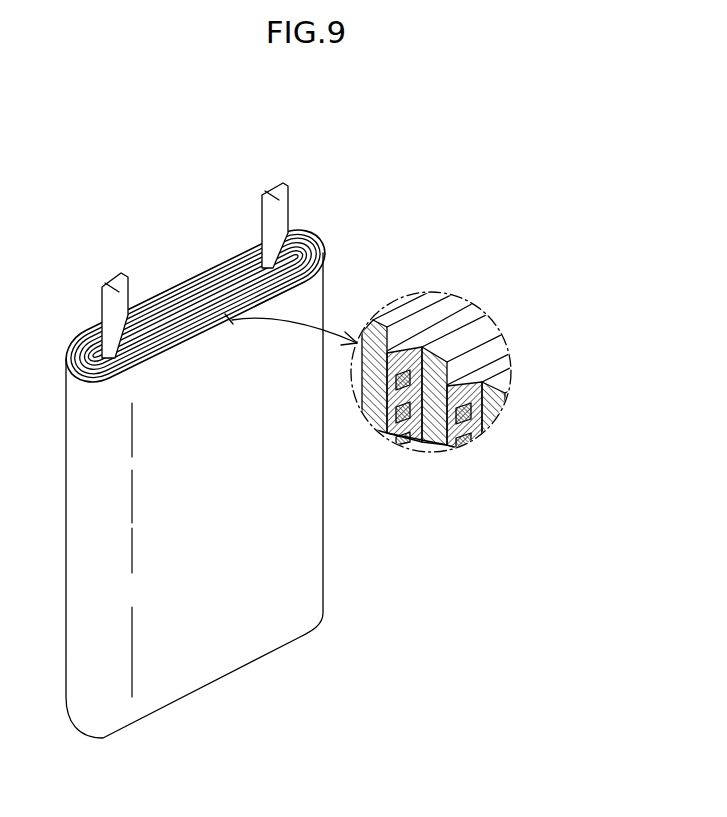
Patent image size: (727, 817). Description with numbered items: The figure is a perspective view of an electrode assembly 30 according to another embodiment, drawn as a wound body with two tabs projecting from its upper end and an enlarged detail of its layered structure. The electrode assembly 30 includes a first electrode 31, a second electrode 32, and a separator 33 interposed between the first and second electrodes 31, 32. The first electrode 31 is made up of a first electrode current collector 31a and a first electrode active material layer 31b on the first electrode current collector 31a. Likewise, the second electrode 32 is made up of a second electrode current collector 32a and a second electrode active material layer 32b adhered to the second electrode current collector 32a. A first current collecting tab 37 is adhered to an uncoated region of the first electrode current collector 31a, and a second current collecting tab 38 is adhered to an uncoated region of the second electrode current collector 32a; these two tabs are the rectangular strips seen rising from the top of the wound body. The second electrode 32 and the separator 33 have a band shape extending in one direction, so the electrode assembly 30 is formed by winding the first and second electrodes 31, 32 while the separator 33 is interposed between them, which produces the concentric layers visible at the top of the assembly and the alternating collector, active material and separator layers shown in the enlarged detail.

The electrode assembly 30 is at (185, 170).
The first electrode 31 is at (447, 317).
The first electrode current collector 31a is at (402, 447).
The first electrode active material layer 31b is at (422, 450).
The second electrode 32 is at (502, 355).
The second electrode current collector 32a is at (472, 433).
The second electrode active material layer 32b is at (482, 422).
The separator 33 is at (480, 328).
The first current collecting tab 37 is at (118, 291).
The second current collecting tab 38 is at (276, 204).